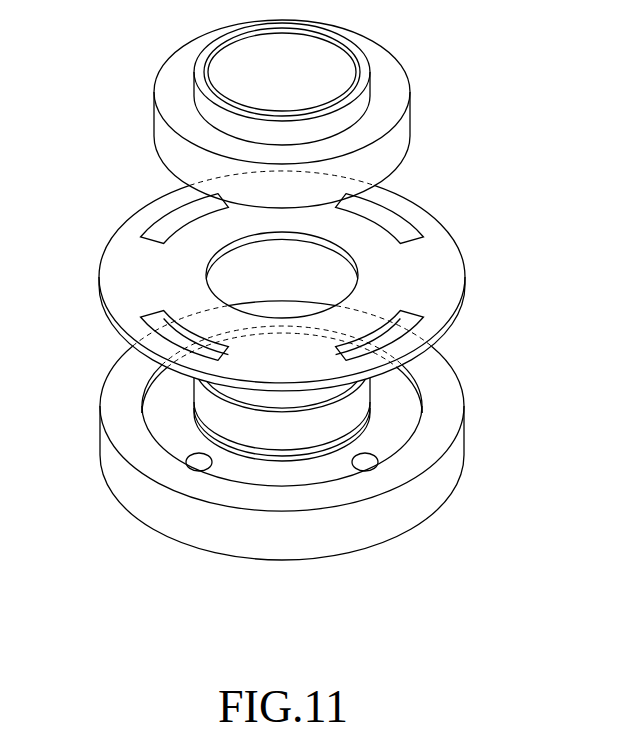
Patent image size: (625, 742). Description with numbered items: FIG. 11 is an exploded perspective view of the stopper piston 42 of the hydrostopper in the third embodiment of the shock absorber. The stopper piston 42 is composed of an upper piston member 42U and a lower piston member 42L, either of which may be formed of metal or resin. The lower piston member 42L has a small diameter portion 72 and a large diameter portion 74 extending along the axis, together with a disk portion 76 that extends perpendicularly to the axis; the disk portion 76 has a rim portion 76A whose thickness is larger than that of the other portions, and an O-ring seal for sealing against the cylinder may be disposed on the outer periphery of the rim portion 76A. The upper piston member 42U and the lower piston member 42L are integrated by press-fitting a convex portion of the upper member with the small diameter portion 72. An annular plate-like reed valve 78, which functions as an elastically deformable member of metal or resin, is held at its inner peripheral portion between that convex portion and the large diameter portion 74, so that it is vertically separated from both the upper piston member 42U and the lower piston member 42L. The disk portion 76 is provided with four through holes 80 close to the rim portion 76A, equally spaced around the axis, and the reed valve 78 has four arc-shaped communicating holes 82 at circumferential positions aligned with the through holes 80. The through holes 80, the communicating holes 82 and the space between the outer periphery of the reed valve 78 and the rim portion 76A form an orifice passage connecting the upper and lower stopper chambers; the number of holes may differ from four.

The stopper piston 42 is at (296, 315).
The upper piston member 42U is at (407, 134).
The lower piston member 42L is at (296, 455).
The small diameter portion 72 is at (250, 433).
The large diameter portion 74 is at (306, 456).
The disk portion 76 is at (110, 466).
The rim portion 76A is at (105, 383).
The reed valve 78 is at (298, 281).
The through holes 80 is at (380, 457).
The communicating holes 82 is at (163, 220).